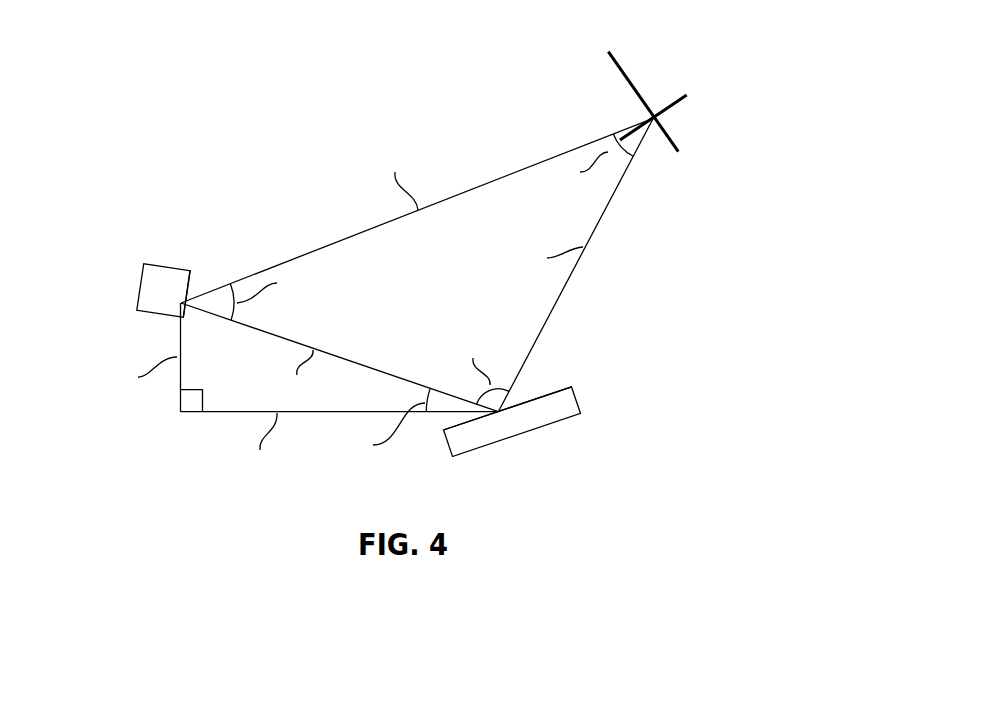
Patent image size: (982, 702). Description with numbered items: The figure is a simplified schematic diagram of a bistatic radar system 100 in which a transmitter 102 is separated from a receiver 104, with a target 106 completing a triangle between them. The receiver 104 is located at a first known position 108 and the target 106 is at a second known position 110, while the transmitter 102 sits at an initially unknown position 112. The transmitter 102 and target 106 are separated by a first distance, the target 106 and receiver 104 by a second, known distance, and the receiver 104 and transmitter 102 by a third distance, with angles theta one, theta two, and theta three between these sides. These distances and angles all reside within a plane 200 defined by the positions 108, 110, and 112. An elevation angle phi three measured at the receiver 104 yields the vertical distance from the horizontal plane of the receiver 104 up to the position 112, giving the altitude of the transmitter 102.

The bistatic radar system 100 is at (183, 75).
The transmitter 102 is at (137, 287).
The receiver 104 is at (517, 435).
The target 106 is at (677, 108).
The first known position 108 is at (545, 380).
The second known position 110 is at (658, 97).
The initially unknown position 112 is at (197, 280).
The plane 200 is at (612, 207).